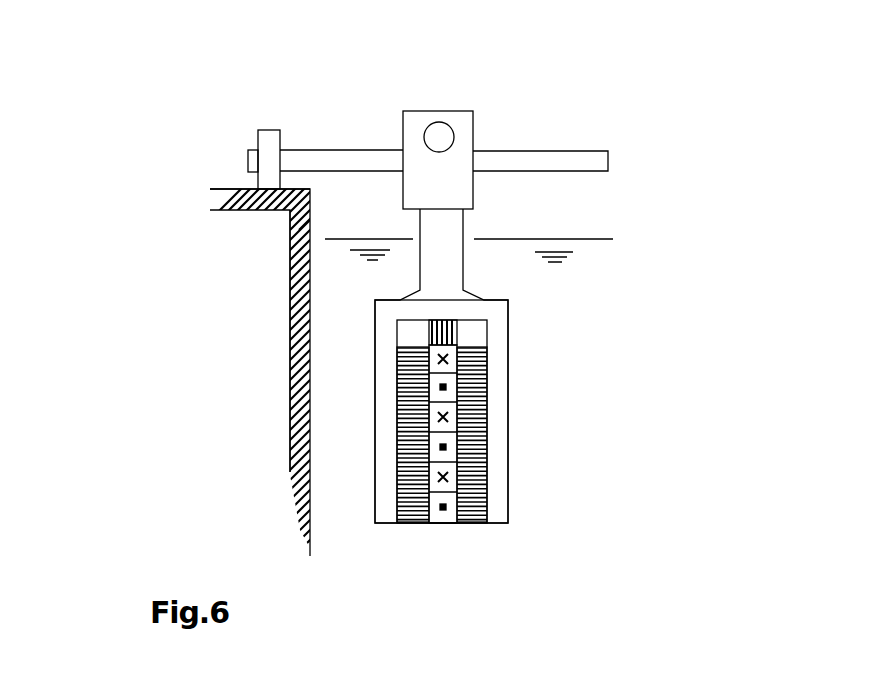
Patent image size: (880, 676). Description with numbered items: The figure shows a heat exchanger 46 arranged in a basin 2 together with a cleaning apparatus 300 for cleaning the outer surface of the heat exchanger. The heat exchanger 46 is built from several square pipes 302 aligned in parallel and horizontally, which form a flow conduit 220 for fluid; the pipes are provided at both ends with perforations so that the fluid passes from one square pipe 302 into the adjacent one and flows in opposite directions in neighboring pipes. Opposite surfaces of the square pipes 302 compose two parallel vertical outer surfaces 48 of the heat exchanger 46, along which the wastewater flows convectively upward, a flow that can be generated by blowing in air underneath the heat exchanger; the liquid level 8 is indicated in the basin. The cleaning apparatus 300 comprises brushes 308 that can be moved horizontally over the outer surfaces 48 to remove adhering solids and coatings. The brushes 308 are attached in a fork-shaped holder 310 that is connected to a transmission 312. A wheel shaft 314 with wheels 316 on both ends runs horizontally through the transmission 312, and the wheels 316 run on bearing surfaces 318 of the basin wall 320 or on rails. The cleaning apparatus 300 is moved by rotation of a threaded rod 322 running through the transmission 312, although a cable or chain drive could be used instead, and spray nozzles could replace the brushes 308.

The basin 2 is at (297, 375).
The liquid surface 8 is at (563, 239).
The heat exchanger 46 is at (465, 358).
The vertical outer surfaces 48 is at (423, 453).
The flow conduit 220 is at (447, 442).
The cleaning apparatus 300 is at (598, 278).
The square pipes 302 is at (445, 400).
The brushes 308 is at (398, 415).
The fork-shaped holder 310 is at (434, 276).
The transmission 312 is at (470, 140).
The wheel shaft 314 is at (578, 153).
The wheels 316 is at (276, 134).
The bearing surfaces 318 is at (242, 187).
The basin wall 320 is at (295, 313).
The threaded rod 322 is at (438, 130).